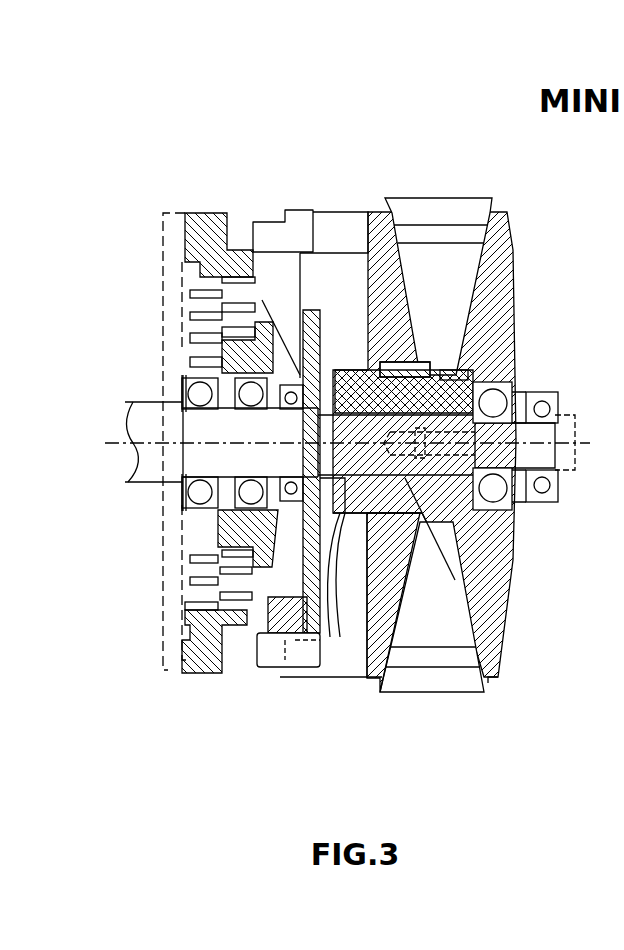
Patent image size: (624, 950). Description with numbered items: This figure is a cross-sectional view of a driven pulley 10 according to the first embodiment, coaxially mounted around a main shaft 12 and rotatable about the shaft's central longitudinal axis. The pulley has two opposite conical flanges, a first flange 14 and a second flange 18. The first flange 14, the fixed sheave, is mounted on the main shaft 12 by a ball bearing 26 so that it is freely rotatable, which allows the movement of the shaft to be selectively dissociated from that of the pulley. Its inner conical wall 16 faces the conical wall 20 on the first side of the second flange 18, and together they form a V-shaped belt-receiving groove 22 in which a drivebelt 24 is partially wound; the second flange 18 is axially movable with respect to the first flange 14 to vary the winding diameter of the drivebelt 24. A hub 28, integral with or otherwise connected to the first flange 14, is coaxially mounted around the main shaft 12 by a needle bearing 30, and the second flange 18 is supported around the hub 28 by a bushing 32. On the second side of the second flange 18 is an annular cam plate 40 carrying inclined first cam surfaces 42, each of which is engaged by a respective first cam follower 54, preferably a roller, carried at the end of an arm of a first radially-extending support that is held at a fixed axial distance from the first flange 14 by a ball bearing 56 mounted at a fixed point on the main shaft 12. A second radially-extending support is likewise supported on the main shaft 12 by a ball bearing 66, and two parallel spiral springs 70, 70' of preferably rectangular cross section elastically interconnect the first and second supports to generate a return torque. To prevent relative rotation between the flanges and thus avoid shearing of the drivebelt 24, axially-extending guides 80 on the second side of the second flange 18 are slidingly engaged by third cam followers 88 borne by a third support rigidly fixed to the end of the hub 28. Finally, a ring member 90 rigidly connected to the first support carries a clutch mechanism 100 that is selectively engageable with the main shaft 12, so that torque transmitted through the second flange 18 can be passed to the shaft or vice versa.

The driven pulley 10 is at (156, 96).
The main shaft 12 is at (133, 463).
The first flange 14 is at (498, 680).
The inner conical wall 16 is at (445, 583).
The second flange 18 is at (372, 682).
The inner conical wall 20 is at (400, 630).
The belt-receiving groove 22 is at (444, 292).
The drivebelt 24 is at (433, 678).
The ball bearing 26 is at (505, 400).
The hub 28 is at (332, 218).
The needle bearing 30 is at (452, 378).
The bushing 32 is at (400, 370).
The annular cam plate 40 is at (305, 210).
The first cam surface 42 is at (357, 218).
The first cam followers 54 is at (268, 230).
The ball bearing 56 is at (270, 497).
The ball bearing 66 is at (182, 378).
The spiral spring 70 is at (148, 450).
The spiral spring 70' is at (184, 451).
The axially-extending guides 80 is at (332, 663).
The third cam followers 88 is at (272, 655).
The ring member 90 is at (210, 660).
The clutch mechanism 100 is at (162, 657).